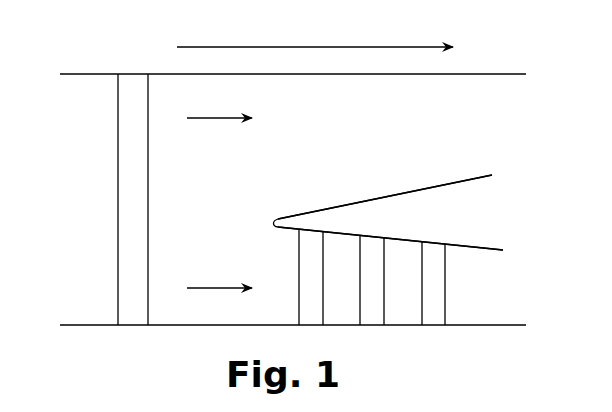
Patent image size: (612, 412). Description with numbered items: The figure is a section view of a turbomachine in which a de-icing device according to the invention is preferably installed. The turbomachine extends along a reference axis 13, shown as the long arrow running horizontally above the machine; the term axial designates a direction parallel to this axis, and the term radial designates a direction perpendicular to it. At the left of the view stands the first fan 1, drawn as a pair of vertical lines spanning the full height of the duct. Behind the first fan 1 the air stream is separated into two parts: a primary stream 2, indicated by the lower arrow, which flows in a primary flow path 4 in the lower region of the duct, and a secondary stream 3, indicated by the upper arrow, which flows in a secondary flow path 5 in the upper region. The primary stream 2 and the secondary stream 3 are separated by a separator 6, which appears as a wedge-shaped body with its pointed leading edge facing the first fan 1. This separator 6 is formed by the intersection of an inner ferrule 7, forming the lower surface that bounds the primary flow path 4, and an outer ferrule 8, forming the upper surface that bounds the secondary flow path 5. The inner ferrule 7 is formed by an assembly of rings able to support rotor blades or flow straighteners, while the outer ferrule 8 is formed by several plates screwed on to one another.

The first fan 1 is at (132, 193).
The primary stream 2 is at (209, 288).
The secondary stream 3 is at (207, 118).
The primary flow path 4 is at (472, 309).
The secondary flow path 5 is at (345, 120).
The separator 6 is at (347, 217).
The inner ferrule 7 is at (469, 253).
The outer ferrule 8 is at (387, 197).
The reference axis 13 is at (327, 47).